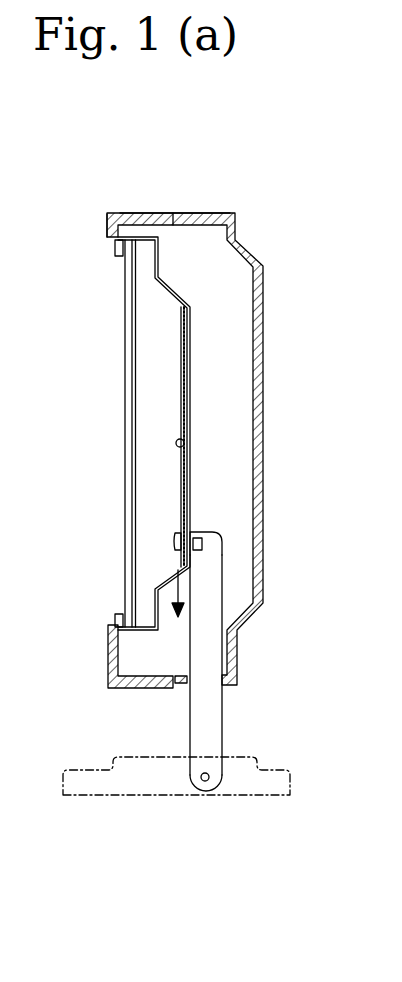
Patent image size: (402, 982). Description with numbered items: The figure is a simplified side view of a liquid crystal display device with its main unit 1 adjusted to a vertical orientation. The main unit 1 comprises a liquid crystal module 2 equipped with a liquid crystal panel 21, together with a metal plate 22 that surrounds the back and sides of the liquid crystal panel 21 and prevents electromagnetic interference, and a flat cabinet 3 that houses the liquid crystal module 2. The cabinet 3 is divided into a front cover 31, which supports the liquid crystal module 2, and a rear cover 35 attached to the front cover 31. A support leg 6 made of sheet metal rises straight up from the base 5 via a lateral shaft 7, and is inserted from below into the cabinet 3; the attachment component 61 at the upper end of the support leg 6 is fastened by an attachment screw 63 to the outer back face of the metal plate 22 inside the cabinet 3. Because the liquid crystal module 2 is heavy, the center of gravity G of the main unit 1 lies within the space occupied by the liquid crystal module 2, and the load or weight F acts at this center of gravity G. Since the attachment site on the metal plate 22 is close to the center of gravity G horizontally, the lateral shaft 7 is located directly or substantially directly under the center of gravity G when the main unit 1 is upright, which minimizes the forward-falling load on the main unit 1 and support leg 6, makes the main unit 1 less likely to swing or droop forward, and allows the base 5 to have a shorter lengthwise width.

The main unit 1 is at (272, 233).
The liquid crystal module 2 is at (157, 260).
The liquid crystal panel 21 is at (128, 351).
The metal plate 22 is at (193, 367).
The cabinet 3 is at (223, 135).
The front cover 31 is at (142, 213).
The rear cover 35 is at (207, 213).
The base 5 is at (90, 770).
The support leg 6 is at (222, 718).
The attachment component 61 is at (213, 531).
The attachment screw 63 is at (200, 550).
The lateral shaft 7 is at (205, 783).
The center of gravity G is at (176, 442).
The load (weight) F is at (178, 611).